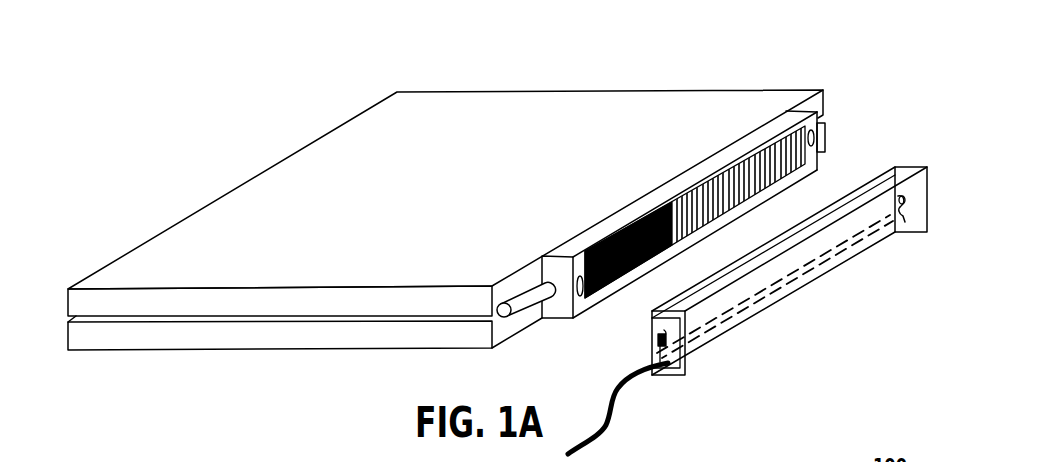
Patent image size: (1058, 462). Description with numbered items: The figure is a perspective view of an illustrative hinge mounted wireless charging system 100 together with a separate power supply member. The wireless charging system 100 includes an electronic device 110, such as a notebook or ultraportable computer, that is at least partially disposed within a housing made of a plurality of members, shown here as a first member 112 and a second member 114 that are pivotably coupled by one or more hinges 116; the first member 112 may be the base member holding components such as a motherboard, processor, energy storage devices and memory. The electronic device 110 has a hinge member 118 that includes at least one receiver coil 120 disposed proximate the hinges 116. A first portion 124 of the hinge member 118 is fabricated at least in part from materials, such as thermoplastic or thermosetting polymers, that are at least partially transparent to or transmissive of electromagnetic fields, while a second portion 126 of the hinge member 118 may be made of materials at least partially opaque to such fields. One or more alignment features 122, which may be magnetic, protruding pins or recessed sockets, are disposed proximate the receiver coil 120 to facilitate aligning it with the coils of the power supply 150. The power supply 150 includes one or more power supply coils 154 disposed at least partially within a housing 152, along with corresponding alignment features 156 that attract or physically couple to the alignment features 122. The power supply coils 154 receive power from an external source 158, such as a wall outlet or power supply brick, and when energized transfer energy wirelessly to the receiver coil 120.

The wireless charging system 100 is at (800, 24).
The electronic device 110 is at (633, 80).
The first member 112 is at (313, 336).
The second member 114 is at (479, 195).
The hinge 116 is at (518, 303).
The hinge member 118 is at (792, 100).
The receiver coil 120 is at (818, 153).
The alignment feature 122 is at (822, 140).
The first portion of the hinge member 124 is at (590, 292).
The second portion of the hinge member 126 is at (657, 196).
The power supply 150 is at (896, 156).
The housing 152 is at (713, 361).
The power supply coil 154 is at (775, 277).
The alignment feature 156 is at (897, 222).
The external source 158 is at (620, 396).